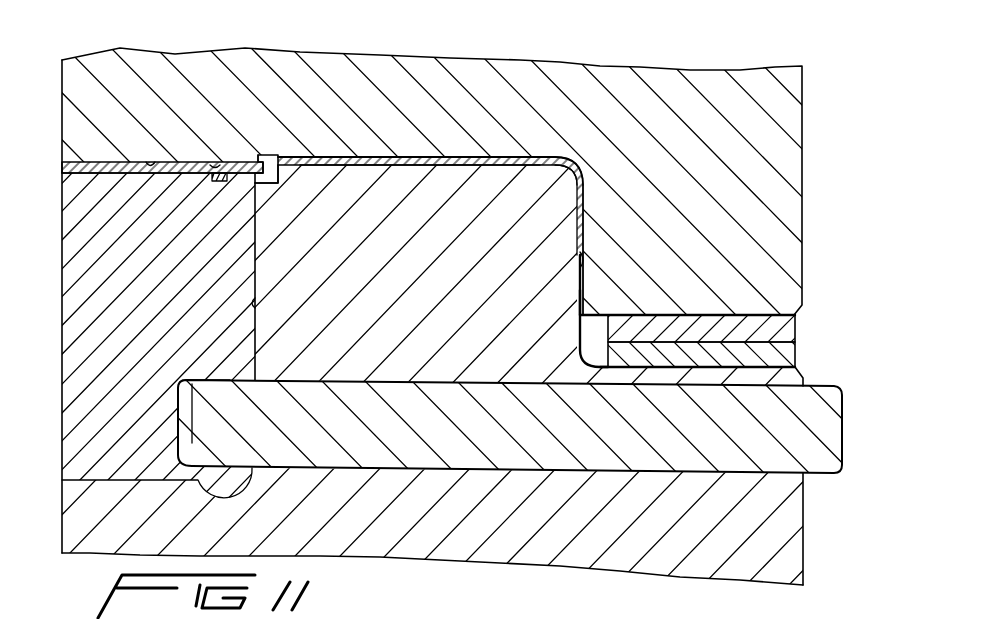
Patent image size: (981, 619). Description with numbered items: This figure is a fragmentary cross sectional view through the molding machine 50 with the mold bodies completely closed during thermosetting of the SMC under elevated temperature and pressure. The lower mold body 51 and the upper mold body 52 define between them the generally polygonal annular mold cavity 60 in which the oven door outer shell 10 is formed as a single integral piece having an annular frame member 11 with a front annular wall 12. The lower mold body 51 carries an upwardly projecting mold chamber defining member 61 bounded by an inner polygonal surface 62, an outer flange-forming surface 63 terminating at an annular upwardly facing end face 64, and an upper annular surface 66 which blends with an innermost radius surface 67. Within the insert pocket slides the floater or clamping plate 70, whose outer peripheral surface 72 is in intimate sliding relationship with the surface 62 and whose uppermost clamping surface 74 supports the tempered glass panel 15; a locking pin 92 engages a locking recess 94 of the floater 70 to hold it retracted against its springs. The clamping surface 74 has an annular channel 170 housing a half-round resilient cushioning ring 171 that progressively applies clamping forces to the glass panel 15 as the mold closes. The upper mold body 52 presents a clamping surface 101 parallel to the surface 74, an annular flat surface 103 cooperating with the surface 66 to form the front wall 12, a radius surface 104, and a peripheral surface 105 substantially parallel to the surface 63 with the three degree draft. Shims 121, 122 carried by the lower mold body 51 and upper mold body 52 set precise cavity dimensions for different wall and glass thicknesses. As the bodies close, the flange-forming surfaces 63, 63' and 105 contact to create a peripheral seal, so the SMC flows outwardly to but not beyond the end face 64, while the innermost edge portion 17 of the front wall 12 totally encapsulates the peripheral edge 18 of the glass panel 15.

The oven door outer shell 10 is at (600, 181).
The annular frame member 11 is at (529, 161).
The front annular wall 12 is at (380, 168).
The tempered glass panel 15 is at (113, 159).
The innermost polygonal edge portion 17 is at (278, 188).
The peripheral edge 18 is at (243, 157).
The molding machine 50 is at (666, 55).
The lower mold body 51 is at (560, 564).
The upper mold body 52 is at (712, 88).
The annular mold cavity 60 is at (402, 158).
The mold chamber defining member 61 is at (488, 370).
The inner polygonal surface 62 is at (253, 306).
The outer polygonal flange-forming surface 63 is at (609, 263).
The flange-forming surface 63' is at (624, 323).
The annular upwardly facing end face 64 is at (584, 262).
The upper annular surface 66 is at (460, 168).
The innermost radius surface 67 is at (286, 157).
The floater or clamping plate 70 is at (60, 366).
The outer peripheral surface 72 is at (252, 258).
The clamping surface 74 is at (104, 174).
The locking pin 92 is at (437, 445).
The locking recess 94 is at (219, 383).
The clamping surface 101 is at (149, 164).
The annular flat surface 103 is at (483, 157).
The radius surface 104 is at (572, 166).
The peripheral surface 105 is at (568, 205).
The shim 121 is at (794, 352).
The shim 122 is at (794, 330).
The annular recess or channel 170 is at (221, 182).
The cushioning ring 171 is at (213, 164).